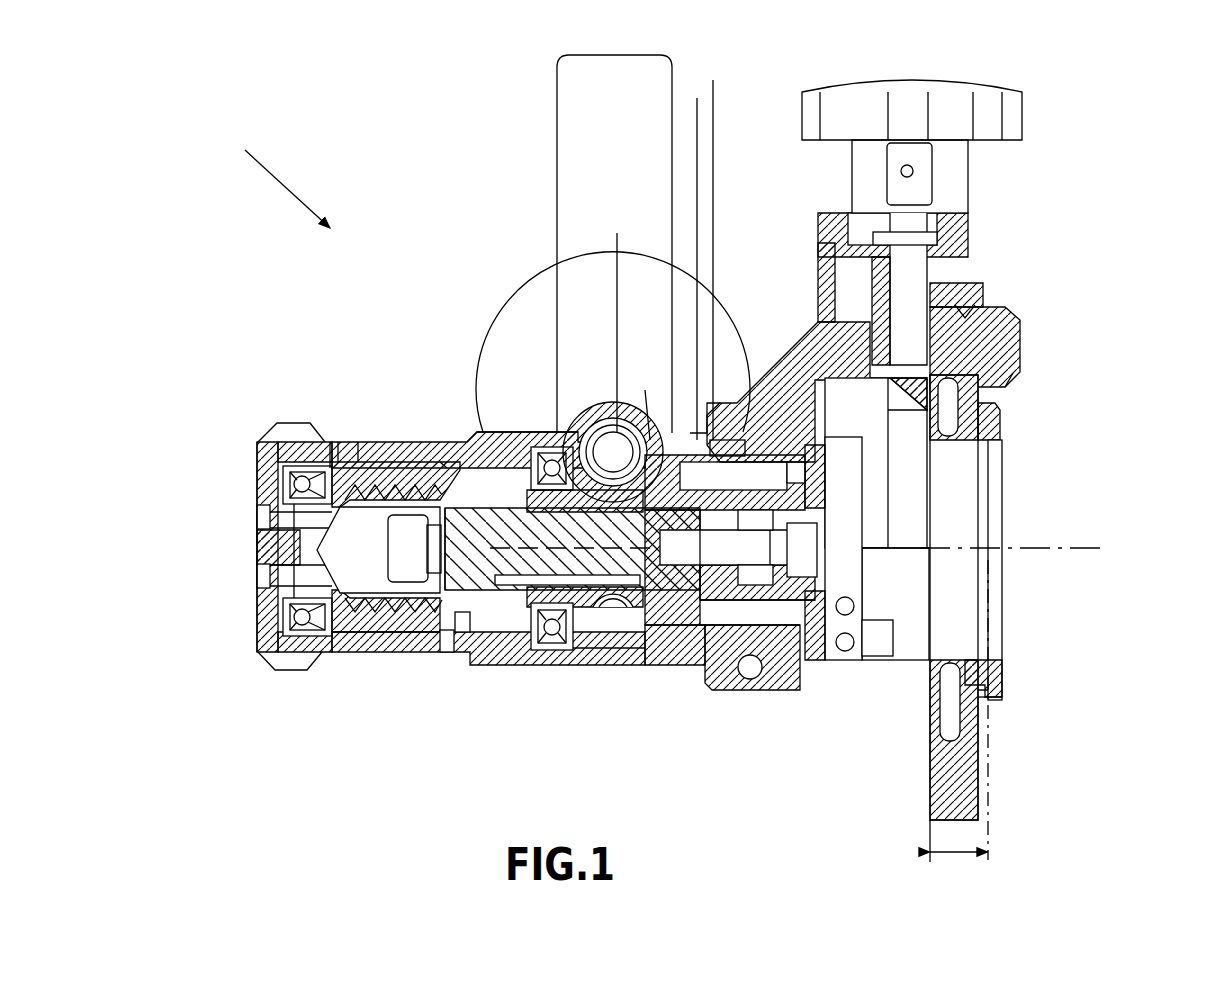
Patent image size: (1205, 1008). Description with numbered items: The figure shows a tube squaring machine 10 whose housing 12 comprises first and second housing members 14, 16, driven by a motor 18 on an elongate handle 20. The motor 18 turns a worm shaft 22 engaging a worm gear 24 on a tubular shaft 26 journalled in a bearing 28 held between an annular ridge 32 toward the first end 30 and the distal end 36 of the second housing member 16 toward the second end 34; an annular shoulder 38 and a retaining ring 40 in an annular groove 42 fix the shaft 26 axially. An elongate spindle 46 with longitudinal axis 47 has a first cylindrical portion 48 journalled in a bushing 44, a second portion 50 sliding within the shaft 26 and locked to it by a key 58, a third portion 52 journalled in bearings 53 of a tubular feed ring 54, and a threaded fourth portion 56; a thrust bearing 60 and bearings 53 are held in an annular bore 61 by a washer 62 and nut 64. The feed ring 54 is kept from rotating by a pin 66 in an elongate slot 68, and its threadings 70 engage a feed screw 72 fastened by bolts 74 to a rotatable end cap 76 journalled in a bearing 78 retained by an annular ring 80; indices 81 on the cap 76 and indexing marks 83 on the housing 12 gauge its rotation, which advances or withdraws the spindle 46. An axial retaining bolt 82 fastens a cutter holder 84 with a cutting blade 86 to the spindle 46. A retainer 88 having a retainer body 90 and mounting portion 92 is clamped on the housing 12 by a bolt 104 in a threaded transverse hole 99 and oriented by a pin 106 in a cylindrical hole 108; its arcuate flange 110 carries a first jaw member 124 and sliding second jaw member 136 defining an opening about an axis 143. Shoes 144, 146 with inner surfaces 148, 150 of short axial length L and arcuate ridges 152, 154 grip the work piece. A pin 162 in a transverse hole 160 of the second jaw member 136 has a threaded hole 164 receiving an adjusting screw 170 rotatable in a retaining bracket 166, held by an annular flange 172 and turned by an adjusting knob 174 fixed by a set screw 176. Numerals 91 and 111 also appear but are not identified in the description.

The squaring machine 10 is at (273, 174).
The housing 12 is at (666, 672).
The first housing member 14 is at (682, 667).
The second housing member 16 is at (543, 648).
The motor 18 is at (528, 427).
The elongate handle 20 is at (557, 105).
The worm shaft 22 is at (617, 233).
The worm gear 24 is at (607, 620).
The tubular shaft 26 is at (610, 665).
The bearings 28 is at (552, 652).
The first end 30 is at (768, 590).
The annular ridge 32 is at (548, 615).
The second end 34 is at (272, 670).
The distal end 36 is at (515, 427).
The annular shoulder 38 is at (500, 447).
The annular retaining ring 40 is at (525, 640).
The annular groove 42 is at (478, 437).
The bushing 44 is at (742, 700).
The elongate spindle 46 is at (728, 692).
The longitudinal axis 47 is at (645, 390).
The first cylindrical portion 48 is at (770, 660).
The second cylindrical portion 50 is at (557, 430).
The third cylindrical portion 52 is at (475, 600).
The bearings 53 is at (412, 447).
The tubular feed ring 54 is at (360, 445).
The threaded fourth portion 56 is at (355, 655).
The key 58 is at (512, 660).
The thrust bearing 60 is at (447, 447).
The annular bore 61 is at (257, 553).
The washer 62 is at (390, 655).
The nut 64 is at (396, 655).
The pin 66 is at (448, 655).
The elongate slot 68 is at (442, 655).
The threadings 70 is at (330, 440).
The feed screw 72 is at (322, 660).
The bolts 74 is at (257, 582).
The rotatable end cap 76 is at (258, 630).
The bearing 78 is at (260, 498).
The annular ring 80 is at (278, 466).
The indices 81 is at (296, 364).
The axial retaining bolt 82 is at (830, 662).
The indexing marks 83 is at (342, 364).
The cutter holder 84 is at (850, 662).
The cutting blade 86 is at (880, 658).
The retainer 88 is at (985, 750).
The retainer body 90 is at (808, 328).
The bracket base 91 is at (735, 700).
The mounting portion 92 is at (780, 357).
The threaded transverse hole 99 is at (752, 690).
The bolt 104 is at (760, 678).
The pin 106 is at (697, 98).
The cylindrical hole 108 is at (717, 252).
The arcuate flange 110 is at (930, 490).
The clamp body step 111 is at (895, 552).
The first jaw member 124 is at (923, 760).
The second jaw member 136 is at (968, 284).
The axis 143 is at (1090, 548).
The first shoe member 144 is at (982, 693).
The second shoe member 146 is at (1003, 412).
The inner surface 148 is at (977, 660).
The inner surface 150 is at (990, 452).
The arcuate ridge 152 is at (978, 688).
The arcuate ridge 154 is at (1013, 373).
The transverse hole 160 is at (1005, 290).
The pin 162 is at (1015, 315).
The threaded hole 164 is at (833, 250).
The retaining bracket 166 is at (850, 200).
The adjusting screw 170 is at (945, 215).
The annular flange 172 is at (917, 273).
The adjusting knob 174 is at (872, 85).
The set screw 176 is at (901, 170).